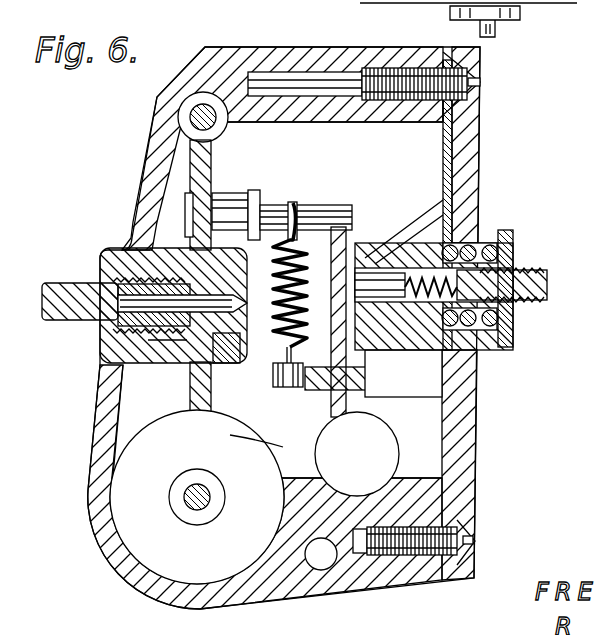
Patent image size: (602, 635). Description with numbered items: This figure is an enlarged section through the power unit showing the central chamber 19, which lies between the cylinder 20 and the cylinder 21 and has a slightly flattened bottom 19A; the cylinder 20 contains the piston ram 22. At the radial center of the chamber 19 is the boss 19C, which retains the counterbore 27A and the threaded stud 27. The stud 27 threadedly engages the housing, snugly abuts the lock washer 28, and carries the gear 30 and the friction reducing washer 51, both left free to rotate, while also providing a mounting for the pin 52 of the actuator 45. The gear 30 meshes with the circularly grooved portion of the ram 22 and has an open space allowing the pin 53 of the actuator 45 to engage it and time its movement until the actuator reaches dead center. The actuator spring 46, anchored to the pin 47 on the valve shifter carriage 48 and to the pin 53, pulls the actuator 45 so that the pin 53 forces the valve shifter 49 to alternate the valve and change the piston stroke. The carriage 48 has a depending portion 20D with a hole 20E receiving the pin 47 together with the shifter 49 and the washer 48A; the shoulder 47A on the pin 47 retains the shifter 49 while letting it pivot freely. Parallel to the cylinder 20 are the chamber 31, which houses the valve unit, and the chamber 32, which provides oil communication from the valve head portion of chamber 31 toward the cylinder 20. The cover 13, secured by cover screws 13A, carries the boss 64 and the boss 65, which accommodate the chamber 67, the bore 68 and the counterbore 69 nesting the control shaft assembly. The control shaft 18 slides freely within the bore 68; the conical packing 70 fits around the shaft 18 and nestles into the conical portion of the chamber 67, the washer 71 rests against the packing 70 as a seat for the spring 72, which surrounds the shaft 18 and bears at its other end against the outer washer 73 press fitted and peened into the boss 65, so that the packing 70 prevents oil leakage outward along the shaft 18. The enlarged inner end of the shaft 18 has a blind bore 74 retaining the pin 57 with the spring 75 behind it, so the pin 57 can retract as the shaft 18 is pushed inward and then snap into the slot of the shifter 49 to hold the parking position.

The cover 13 is at (460, 428).
The cover screws 13A is at (482, 80).
The control shaft 18 is at (548, 290).
The chamber 19 is at (390, 140).
The flattened bottom of chamber 19A is at (270, 527).
The boss 19C is at (106, 396).
The cylinder 20 is at (197, 497).
The depending portion 20D is at (382, 454).
The hole 20E is at (381, 393).
The cylinder 21 is at (215, 97).
The piston ram 22 is at (190, 515).
The stud 27 is at (125, 280).
The counterbore 27A is at (150, 246).
The lock washer 28 is at (108, 320).
The gear 30 is at (211, 178).
The chamber 31 is at (381, 439).
The chamber 32 is at (330, 560).
The actuator 45 is at (254, 192).
The actuator spring 46 is at (262, 377).
The pin 47 is at (303, 390).
The shoulder 47A is at (300, 447).
The valve shifter carriage 48 is at (403, 376).
The washer 48A is at (421, 442).
The valve shifter 49 is at (283, 470).
The washer 51 is at (214, 362).
The pin 52 is at (160, 340).
The pin 53 is at (352, 185).
The pin 57 is at (348, 235).
The boss 64 is at (427, 213).
The boss 65 is at (480, 243).
The chamber 67 is at (498, 224).
The bore 68 is at (372, 273).
The counterbore 69 is at (513, 250).
The packing 70 is at (458, 235).
The washer 71 is at (470, 360).
The spring 72 is at (505, 352).
The outer washer 73 is at (518, 262).
The blind bore 74 is at (387, 375).
The spring 75 is at (512, 305).